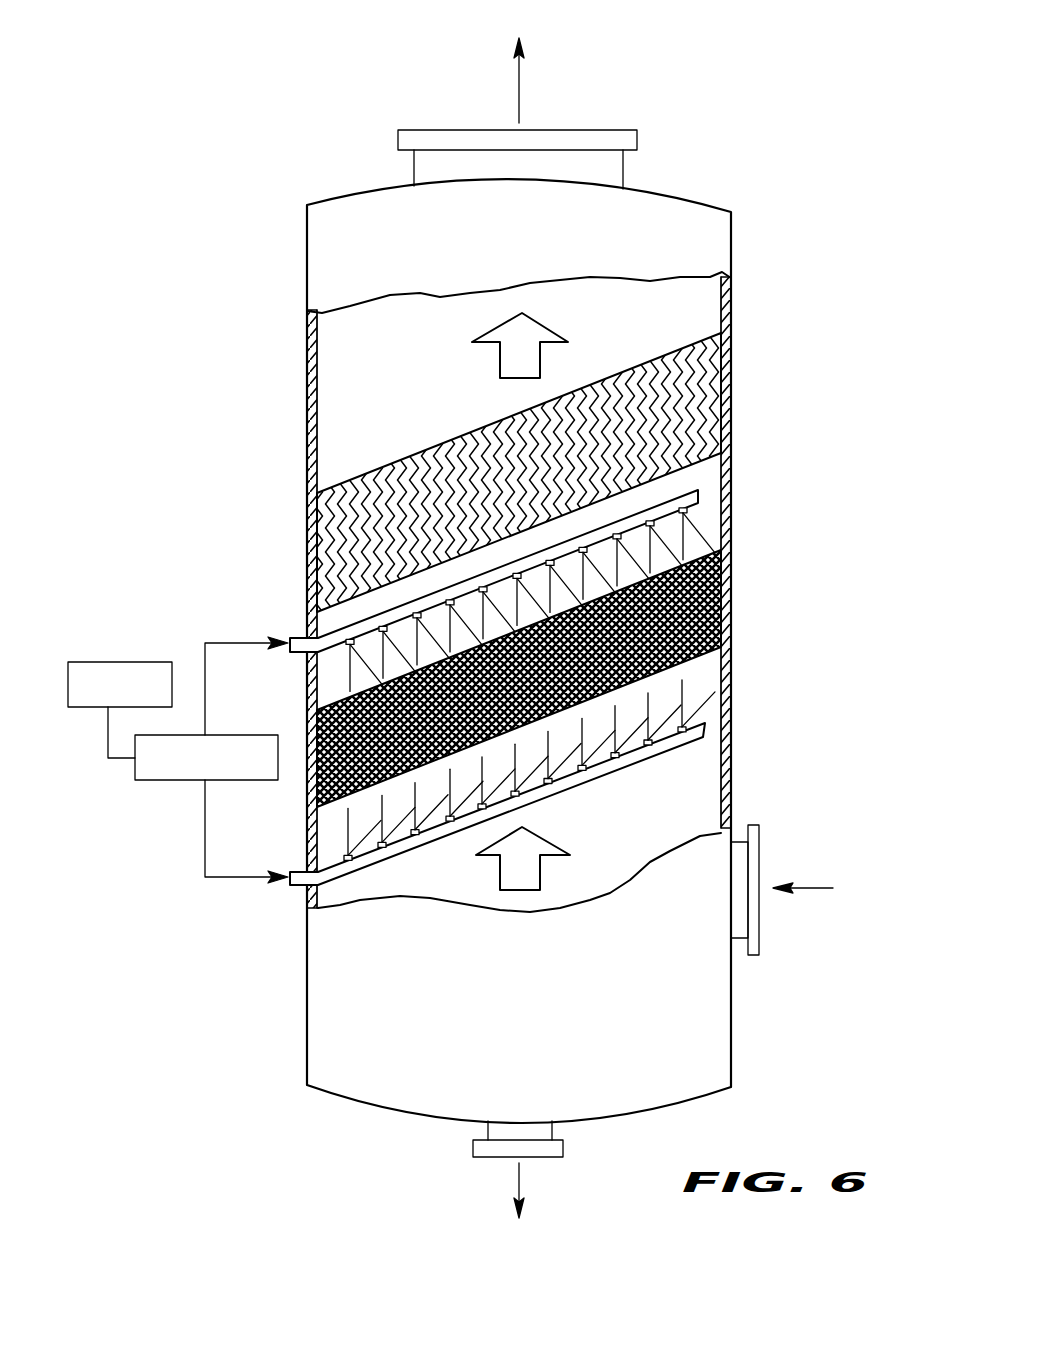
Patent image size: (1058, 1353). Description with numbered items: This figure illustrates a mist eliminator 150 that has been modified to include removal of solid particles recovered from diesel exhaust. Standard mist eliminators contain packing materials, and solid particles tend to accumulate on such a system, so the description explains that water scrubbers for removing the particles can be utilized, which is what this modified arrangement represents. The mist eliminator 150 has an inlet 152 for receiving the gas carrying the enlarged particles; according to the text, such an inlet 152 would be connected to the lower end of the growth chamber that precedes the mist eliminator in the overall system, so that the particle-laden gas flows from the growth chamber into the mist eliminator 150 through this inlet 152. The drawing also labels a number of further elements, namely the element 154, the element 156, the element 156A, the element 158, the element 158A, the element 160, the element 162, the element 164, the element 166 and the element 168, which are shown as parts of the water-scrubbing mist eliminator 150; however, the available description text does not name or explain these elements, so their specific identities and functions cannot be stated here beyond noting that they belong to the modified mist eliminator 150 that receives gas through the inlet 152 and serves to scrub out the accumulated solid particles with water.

The mist eliminator 150 is at (712, 1008).
The inlet 152 is at (755, 835).
The lower chamber / liquid collection zone 154 is at (500, 872).
The lower spray pipe 156 is at (685, 730).
The upper spray pipe 156A is at (698, 493).
The lower spray nozzles 158 is at (683, 713).
The upper spray nozzles 158A is at (690, 506).
The mesh pad 160 is at (710, 590).
The chevron demister 162 is at (710, 372).
The clean gas outlet flange 164 is at (615, 128).
The water supply 166 is at (92, 662).
The control unit 168 is at (170, 780).